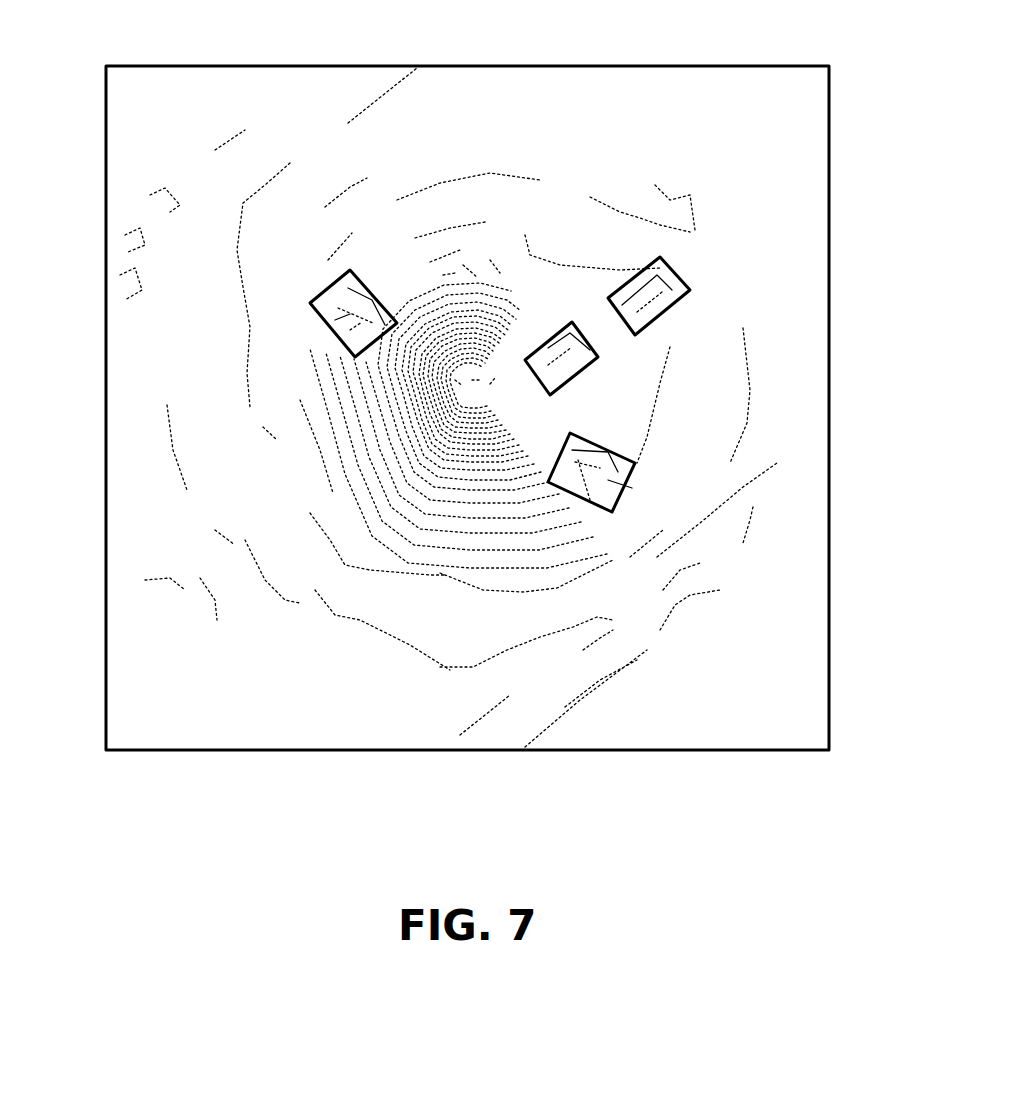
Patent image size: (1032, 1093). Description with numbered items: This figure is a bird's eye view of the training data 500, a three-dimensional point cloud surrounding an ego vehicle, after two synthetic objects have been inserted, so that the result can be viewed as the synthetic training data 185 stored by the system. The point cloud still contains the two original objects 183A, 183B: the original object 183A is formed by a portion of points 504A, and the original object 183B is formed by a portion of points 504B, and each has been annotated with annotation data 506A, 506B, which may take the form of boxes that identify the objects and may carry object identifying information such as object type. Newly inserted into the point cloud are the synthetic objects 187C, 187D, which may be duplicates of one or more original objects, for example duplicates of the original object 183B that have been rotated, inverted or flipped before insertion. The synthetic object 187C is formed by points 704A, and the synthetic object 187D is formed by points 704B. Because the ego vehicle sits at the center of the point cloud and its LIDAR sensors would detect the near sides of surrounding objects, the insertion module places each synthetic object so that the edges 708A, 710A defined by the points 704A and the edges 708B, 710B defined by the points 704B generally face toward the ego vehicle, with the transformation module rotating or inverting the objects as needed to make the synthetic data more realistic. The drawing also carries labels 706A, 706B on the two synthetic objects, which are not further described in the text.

The synthetic training data 185 is at (808, 127).
The training data 500 is at (800, 205).
The original object 183A is at (575, 365).
The original object 183B is at (688, 289).
The synthetic object 187C is at (335, 320).
The synthetic object 187D is at (630, 483).
The portion of points 504A is at (547, 340).
The portion of points 504B is at (637, 284).
The annotation data 506A is at (600, 352).
The annotation data 506B is at (690, 295).
The points 704A is at (378, 288).
The points 704B is at (600, 450).
The first marker corner 706A is at (330, 290).
The second marker corner 706B is at (630, 468).
The edge 708A is at (348, 308).
The edge 708B is at (575, 455).
The edge 710A is at (350, 330).
The edge 710B is at (578, 460).